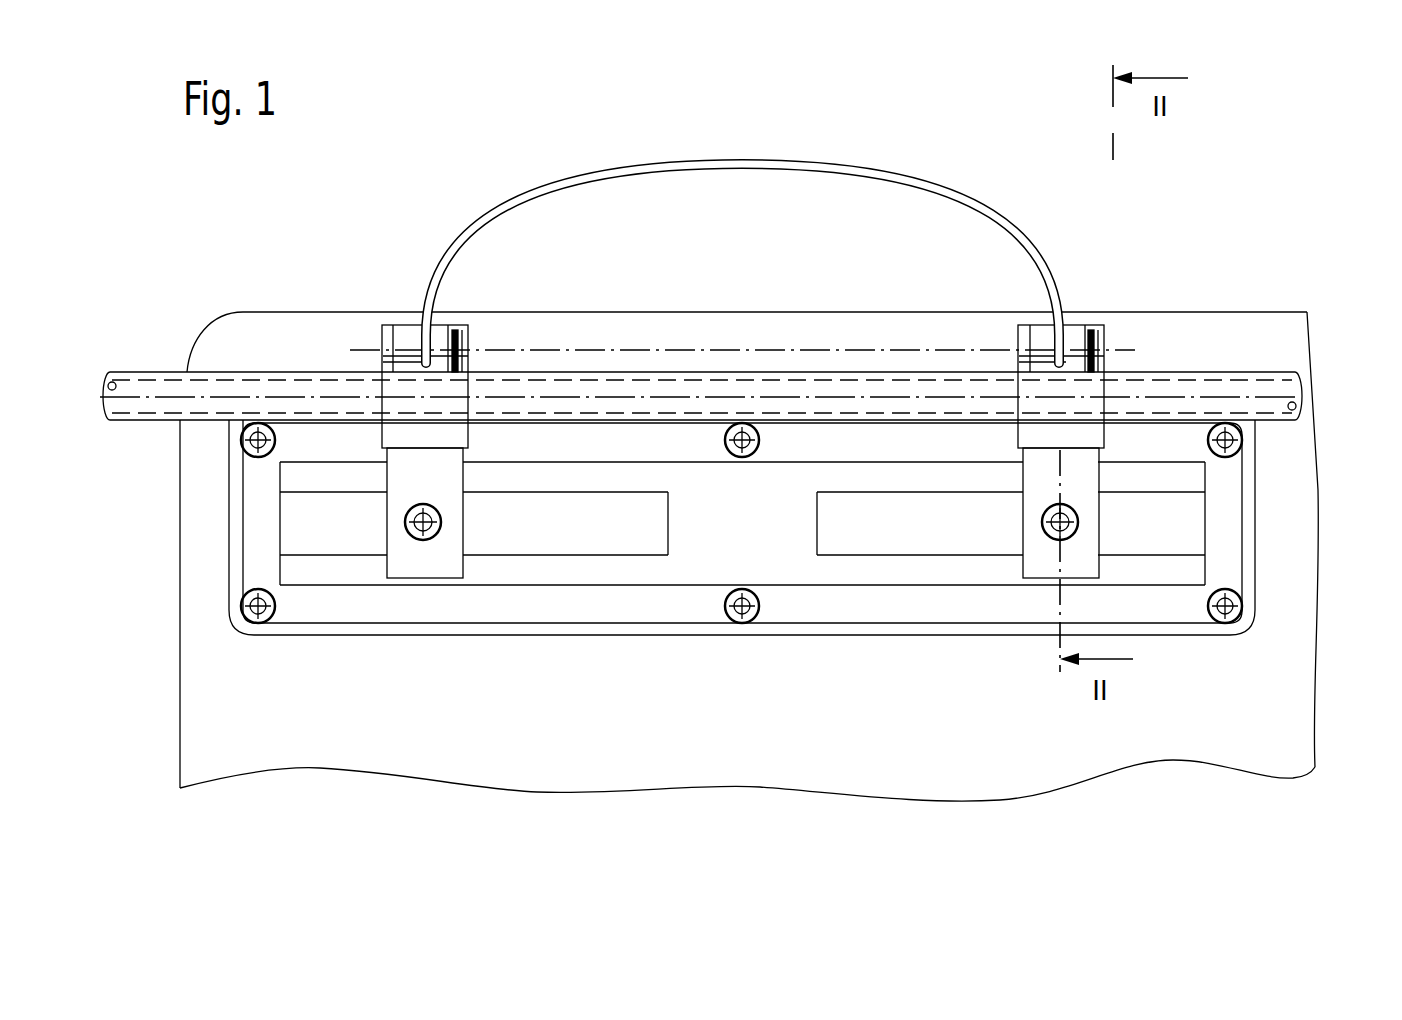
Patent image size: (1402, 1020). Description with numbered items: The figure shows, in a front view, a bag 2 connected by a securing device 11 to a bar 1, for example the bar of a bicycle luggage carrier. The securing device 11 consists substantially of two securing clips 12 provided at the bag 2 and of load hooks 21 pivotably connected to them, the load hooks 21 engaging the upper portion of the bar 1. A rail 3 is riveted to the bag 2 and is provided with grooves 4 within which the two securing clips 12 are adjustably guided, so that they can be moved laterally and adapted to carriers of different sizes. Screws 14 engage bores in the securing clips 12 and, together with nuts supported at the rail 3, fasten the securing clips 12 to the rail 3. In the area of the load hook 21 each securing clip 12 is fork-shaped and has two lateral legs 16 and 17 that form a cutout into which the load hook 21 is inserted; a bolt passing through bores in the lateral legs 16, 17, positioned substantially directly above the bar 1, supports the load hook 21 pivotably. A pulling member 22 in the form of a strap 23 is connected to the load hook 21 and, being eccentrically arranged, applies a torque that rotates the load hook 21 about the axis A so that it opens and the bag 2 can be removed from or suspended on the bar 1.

The bar 1 is at (152, 366).
The bag 2 is at (306, 306).
The rail 3 is at (325, 610).
The grooves 4 is at (572, 552).
The securing device 11 is at (771, 325).
The securing clip 12 is at (378, 510).
The screw 14 is at (419, 540).
The lateral leg 16 is at (457, 328).
The lateral leg 17 is at (388, 325).
The load hook 21 is at (411, 320).
The pulling member 22 is at (845, 166).
The strap 23 is at (647, 168).
The axis A is at (665, 348).